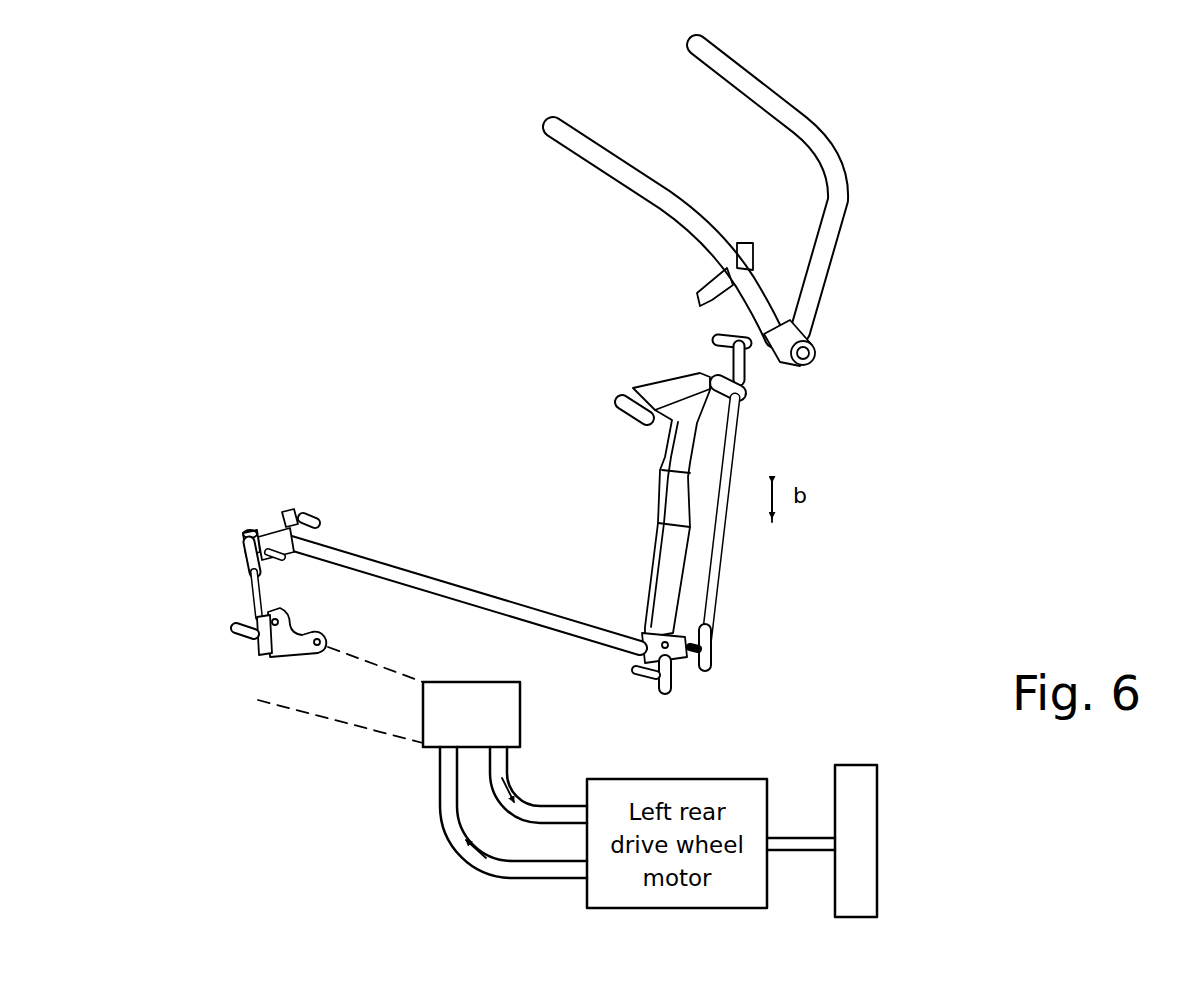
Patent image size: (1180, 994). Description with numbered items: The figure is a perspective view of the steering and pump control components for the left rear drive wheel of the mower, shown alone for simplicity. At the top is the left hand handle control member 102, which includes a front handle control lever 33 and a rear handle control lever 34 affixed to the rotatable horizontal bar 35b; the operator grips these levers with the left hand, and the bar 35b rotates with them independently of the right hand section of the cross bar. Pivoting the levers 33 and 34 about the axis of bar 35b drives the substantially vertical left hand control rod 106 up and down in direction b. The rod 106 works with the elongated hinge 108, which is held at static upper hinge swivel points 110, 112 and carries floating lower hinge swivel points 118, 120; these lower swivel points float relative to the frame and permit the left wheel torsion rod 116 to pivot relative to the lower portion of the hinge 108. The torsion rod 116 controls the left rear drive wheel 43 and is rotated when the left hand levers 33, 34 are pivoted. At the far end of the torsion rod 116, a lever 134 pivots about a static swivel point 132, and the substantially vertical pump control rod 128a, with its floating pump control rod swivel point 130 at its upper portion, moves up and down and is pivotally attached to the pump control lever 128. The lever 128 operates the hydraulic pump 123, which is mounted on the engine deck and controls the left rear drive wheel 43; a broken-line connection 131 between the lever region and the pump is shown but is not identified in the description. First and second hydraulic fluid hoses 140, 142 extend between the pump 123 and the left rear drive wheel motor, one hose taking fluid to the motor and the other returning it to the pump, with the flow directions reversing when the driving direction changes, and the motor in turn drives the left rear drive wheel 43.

The front handle control lever 33 is at (624, 181).
The rear handle control lever 34 is at (772, 105).
The rotatable horizontal bar 35b is at (816, 350).
The left hand handle control member 102 is at (893, 233).
The left hand control rod 106 is at (718, 566).
The elongated hinge 108 is at (677, 481).
The static upper hinge swivel point 110 is at (701, 355).
The static upper hinge swivel point 112 is at (603, 396).
The left wheel torsion rod 116 is at (378, 560).
The floating lower hinge swivel point 118 is at (658, 697).
The floating lower hinge swivel point 120 is at (703, 676).
The hydraulic pump 123 is at (467, 693).
The pump control lever 128 is at (285, 646).
The pump control rod 128a is at (258, 600).
The floating pump control rod swivel point 130 is at (252, 521).
The pump control connection 131 is at (372, 729).
The static swivel point 132 is at (311, 505).
The lever 134 is at (270, 530).
The first hydraulic fluid hose 140 is at (548, 812).
The second hydraulic fluid hose 142 is at (443, 813).
The left rear drive wheel 43 is at (860, 800).